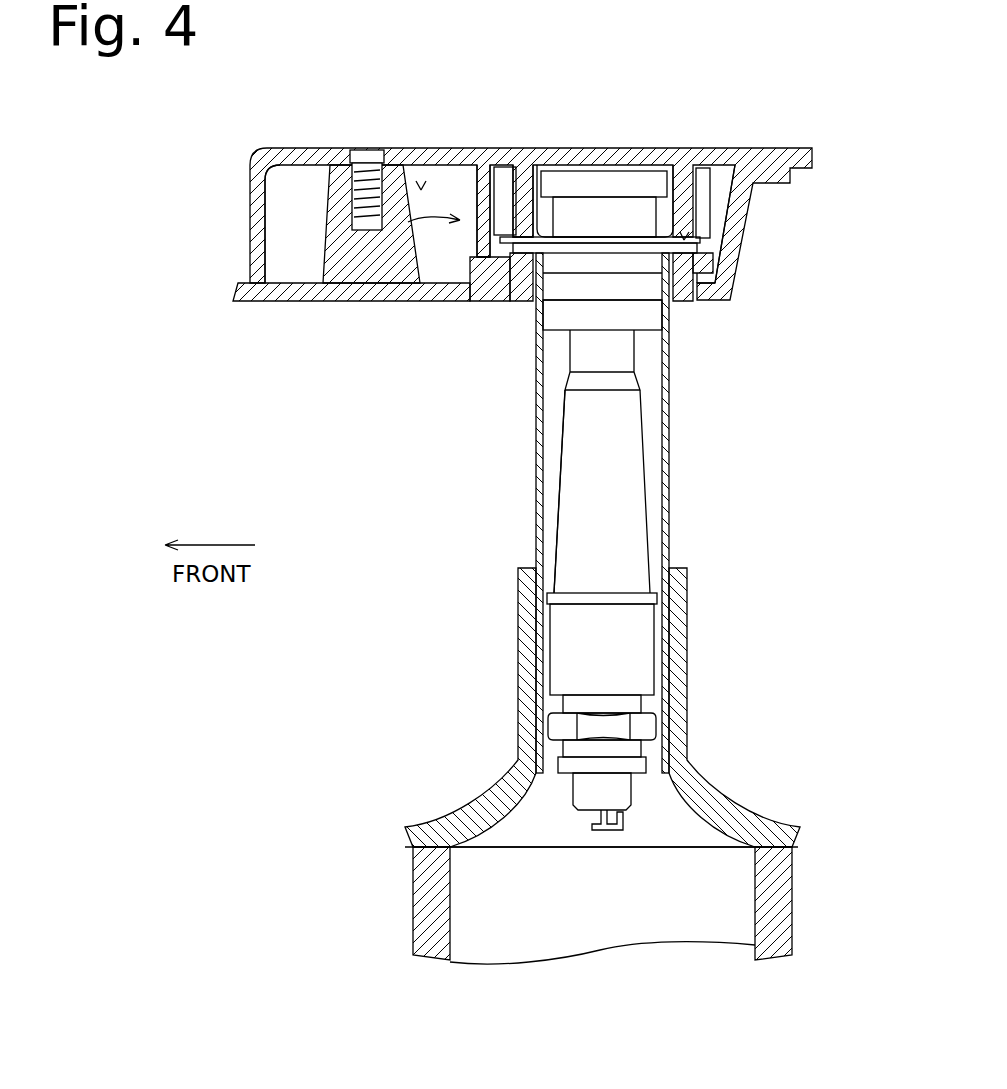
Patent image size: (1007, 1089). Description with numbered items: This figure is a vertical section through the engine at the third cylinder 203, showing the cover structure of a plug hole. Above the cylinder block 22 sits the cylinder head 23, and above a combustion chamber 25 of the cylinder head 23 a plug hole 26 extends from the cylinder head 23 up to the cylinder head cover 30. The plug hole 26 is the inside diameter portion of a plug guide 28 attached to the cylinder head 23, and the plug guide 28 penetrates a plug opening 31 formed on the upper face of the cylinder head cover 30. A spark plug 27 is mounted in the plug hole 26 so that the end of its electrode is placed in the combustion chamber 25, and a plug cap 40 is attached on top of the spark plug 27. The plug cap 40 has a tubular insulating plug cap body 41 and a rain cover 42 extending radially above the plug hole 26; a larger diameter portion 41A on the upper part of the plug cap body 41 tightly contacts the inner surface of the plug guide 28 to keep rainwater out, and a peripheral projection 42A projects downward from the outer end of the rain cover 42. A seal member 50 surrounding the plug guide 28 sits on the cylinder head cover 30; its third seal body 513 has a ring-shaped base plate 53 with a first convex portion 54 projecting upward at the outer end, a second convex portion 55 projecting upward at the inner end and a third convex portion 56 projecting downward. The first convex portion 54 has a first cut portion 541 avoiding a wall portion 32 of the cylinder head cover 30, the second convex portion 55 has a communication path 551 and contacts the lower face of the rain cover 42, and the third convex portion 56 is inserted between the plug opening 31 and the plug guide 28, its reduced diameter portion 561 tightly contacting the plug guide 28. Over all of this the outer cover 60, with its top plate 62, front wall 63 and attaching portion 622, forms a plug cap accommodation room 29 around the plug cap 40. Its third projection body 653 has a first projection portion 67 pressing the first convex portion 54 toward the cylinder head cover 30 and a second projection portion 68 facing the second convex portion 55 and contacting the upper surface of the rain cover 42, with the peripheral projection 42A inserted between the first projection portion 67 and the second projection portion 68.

The cylinder block 22 is at (762, 925).
The cylinder head 23 is at (688, 720).
The combustion chamber 25 is at (562, 841).
The plug hole 26 is at (538, 426).
The spark plug 27 is at (610, 790).
The plug guide 28 is at (537, 488).
The plug cap accommodation room 29 is at (420, 186).
The cylinder head cover 30 is at (250, 303).
The plug opening 31 is at (500, 290).
The wall portion 32 is at (720, 227).
The plug cap 40 is at (665, 441).
The plug cap body 41 is at (640, 490).
The larger diameter portion 41A is at (598, 301).
The rain cover 42 is at (627, 246).
The peripheral projection 42A is at (703, 258).
The seal member 50 is at (526, 252).
The base plate 53 is at (460, 290).
The first convex portion 54 is at (423, 288).
The second convex portion 55 is at (655, 236).
The third convex portion 56 is at (527, 290).
The outer cover 60 is at (744, 134).
The top plate 62 is at (592, 165).
The front wall 63 is at (250, 210).
The first projection portion 67 is at (428, 180).
The second projection portion 68 is at (684, 240).
The third cylinder 203 is at (627, 924).
The third seal body 513 is at (700, 287).
The first cut portion 541 is at (722, 233).
The communication path 551 is at (559, 172).
The reduced diameter portion 561 is at (684, 302).
The attaching portion 622 is at (362, 150).
The third projection body 653 is at (388, 290).